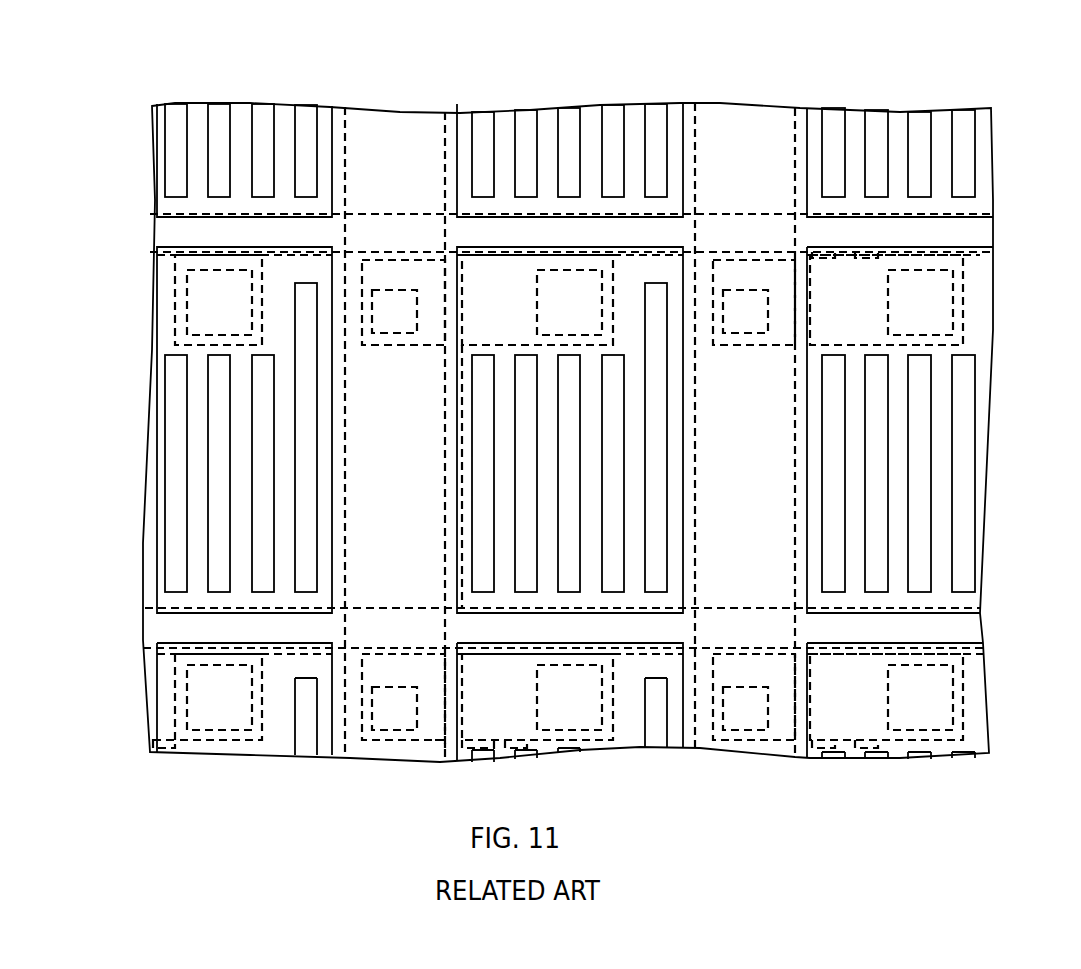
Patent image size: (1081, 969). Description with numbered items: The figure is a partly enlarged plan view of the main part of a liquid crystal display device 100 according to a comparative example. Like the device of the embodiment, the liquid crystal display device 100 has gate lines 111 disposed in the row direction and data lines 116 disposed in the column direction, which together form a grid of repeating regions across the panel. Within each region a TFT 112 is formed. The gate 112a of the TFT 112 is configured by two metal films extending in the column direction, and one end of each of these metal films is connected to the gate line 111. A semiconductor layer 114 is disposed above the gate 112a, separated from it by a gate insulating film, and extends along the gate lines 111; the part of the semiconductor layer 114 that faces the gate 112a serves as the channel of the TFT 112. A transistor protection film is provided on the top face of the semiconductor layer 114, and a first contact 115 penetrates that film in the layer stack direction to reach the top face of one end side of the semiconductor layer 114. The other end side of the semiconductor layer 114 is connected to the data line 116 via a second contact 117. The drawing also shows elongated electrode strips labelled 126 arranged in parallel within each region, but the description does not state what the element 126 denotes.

The liquid crystal display device 100 is at (976, 67).
The gate line 111 is at (163, 228).
The TFT 112 is at (372, 352).
The gate 112a is at (868, 347).
The semiconductor layer 114 is at (417, 255).
The first contact 115 is at (566, 298).
The data line 116 is at (359, 127).
The second contact 117 is at (392, 303).
The finger electrode 126 is at (655, 303).